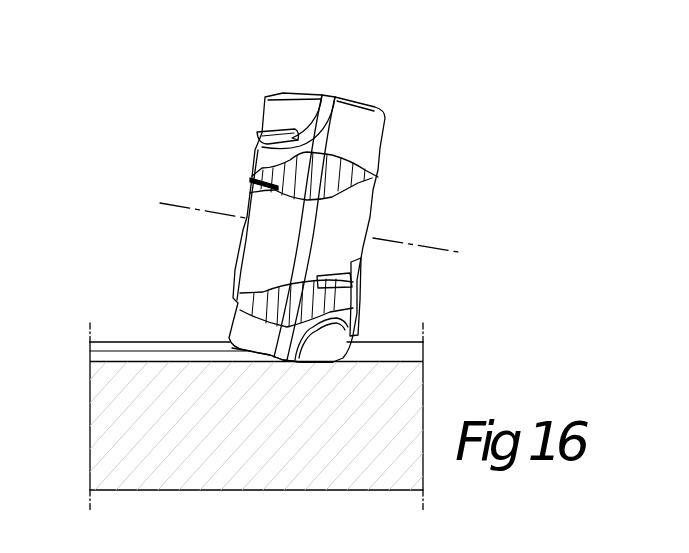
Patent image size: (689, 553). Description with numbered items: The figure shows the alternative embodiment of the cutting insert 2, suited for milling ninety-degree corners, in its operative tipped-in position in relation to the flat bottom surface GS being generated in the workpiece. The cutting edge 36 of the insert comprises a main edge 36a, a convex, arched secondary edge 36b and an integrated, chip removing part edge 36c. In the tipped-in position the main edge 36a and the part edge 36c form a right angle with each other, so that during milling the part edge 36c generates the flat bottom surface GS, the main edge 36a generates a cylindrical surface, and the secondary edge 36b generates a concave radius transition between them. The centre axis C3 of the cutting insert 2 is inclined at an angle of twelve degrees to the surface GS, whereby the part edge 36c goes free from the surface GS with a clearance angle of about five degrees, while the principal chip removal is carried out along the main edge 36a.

The cutting insert 2 is at (320, 231).
The cutting edge 36 is at (259, 89).
The main edge 36a is at (353, 335).
The secondary edge 36b is at (347, 357).
The part edge 36c is at (328, 362).
The flat bottom surface GS is at (178, 362).
The centre axis C3 is at (437, 248).